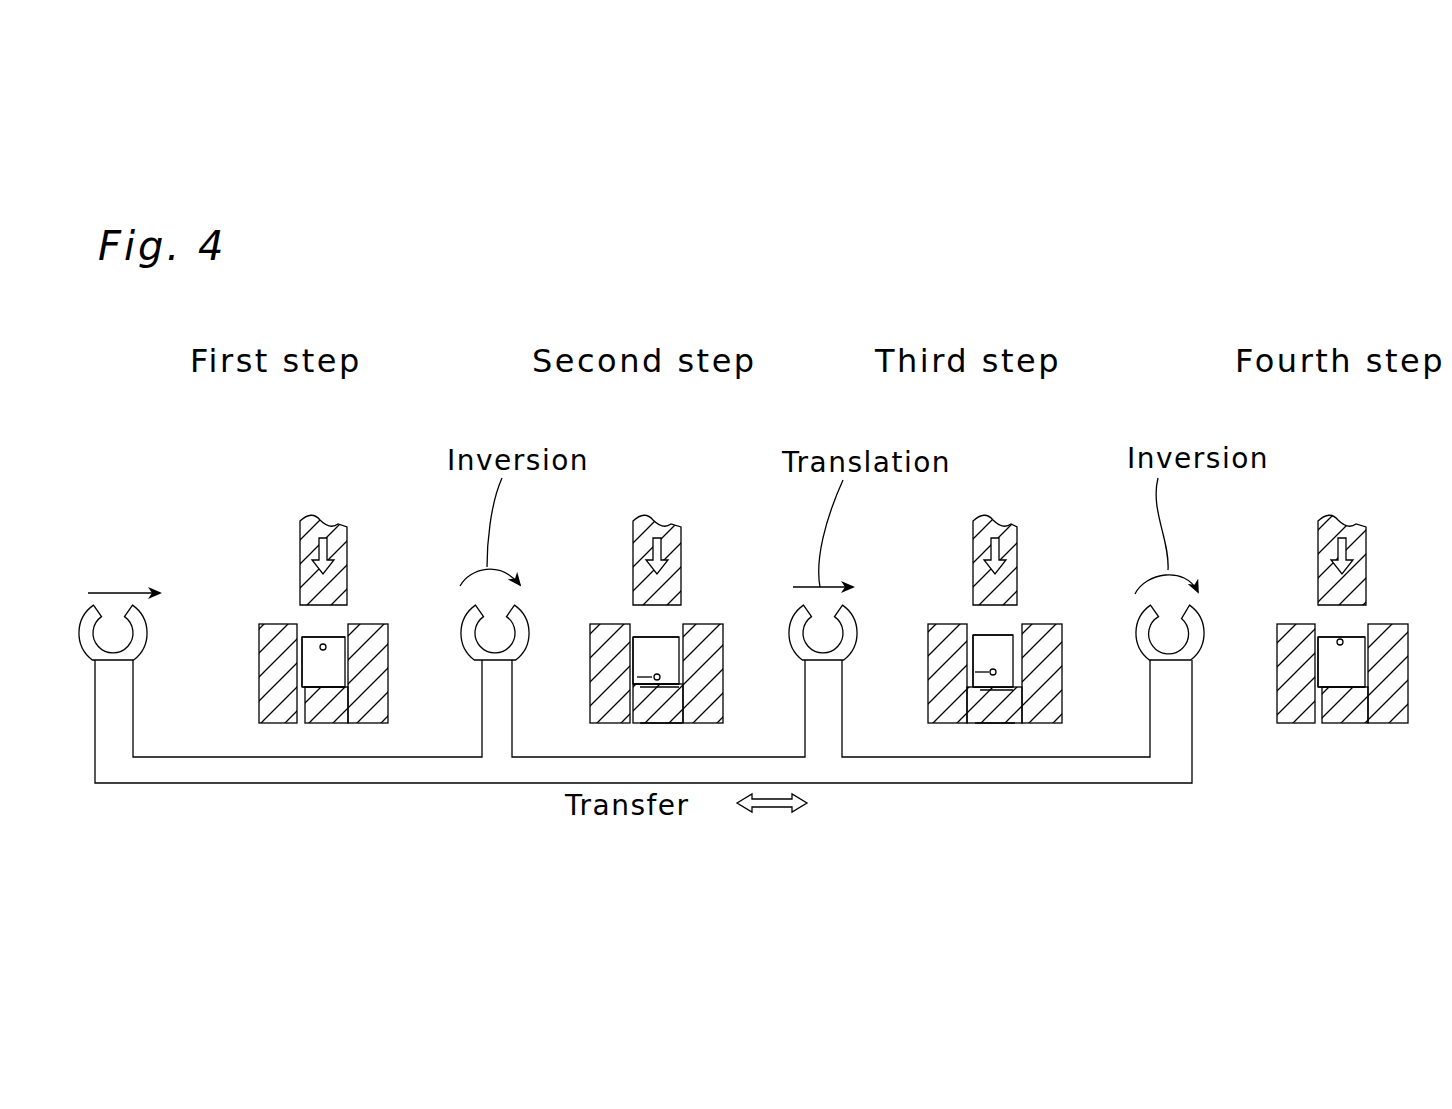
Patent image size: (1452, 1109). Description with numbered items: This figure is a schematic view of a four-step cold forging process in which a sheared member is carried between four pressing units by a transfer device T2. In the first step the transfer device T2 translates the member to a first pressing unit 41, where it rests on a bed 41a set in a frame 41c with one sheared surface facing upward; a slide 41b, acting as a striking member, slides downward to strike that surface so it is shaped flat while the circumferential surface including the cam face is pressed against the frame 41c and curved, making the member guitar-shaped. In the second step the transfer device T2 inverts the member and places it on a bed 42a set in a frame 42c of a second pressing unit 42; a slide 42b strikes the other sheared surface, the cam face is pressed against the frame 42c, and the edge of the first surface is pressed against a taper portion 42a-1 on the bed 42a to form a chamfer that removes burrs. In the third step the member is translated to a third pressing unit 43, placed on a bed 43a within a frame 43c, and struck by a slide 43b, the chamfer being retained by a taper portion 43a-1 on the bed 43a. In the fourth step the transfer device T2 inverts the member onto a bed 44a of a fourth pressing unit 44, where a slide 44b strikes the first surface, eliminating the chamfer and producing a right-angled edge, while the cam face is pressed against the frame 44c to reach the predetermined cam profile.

The first pressing unit 41 is at (341, 604).
The bed 41a is at (343, 723).
The slide 41b is at (349, 548).
The frame 41c is at (388, 652).
The second pressing unit 42 is at (731, 647).
The bed 42a is at (677, 723).
The taper portion 42a-1 is at (682, 690).
The slide 42b is at (682, 540).
The frame 42c is at (756, 628).
The third pressing unit 43 is at (1014, 658).
The bed 43a is at (1010, 722).
The taper portion 43a-1 is at (986, 693).
The slide 43b is at (1018, 537).
The frame 43c is at (1060, 652).
The fourth pressing unit 44 is at (1336, 615).
The bed 44a is at (1330, 720).
The slide 44b is at (1367, 537).
The frame 44c is at (1397, 713).
The transfer device T2 is at (435, 784).